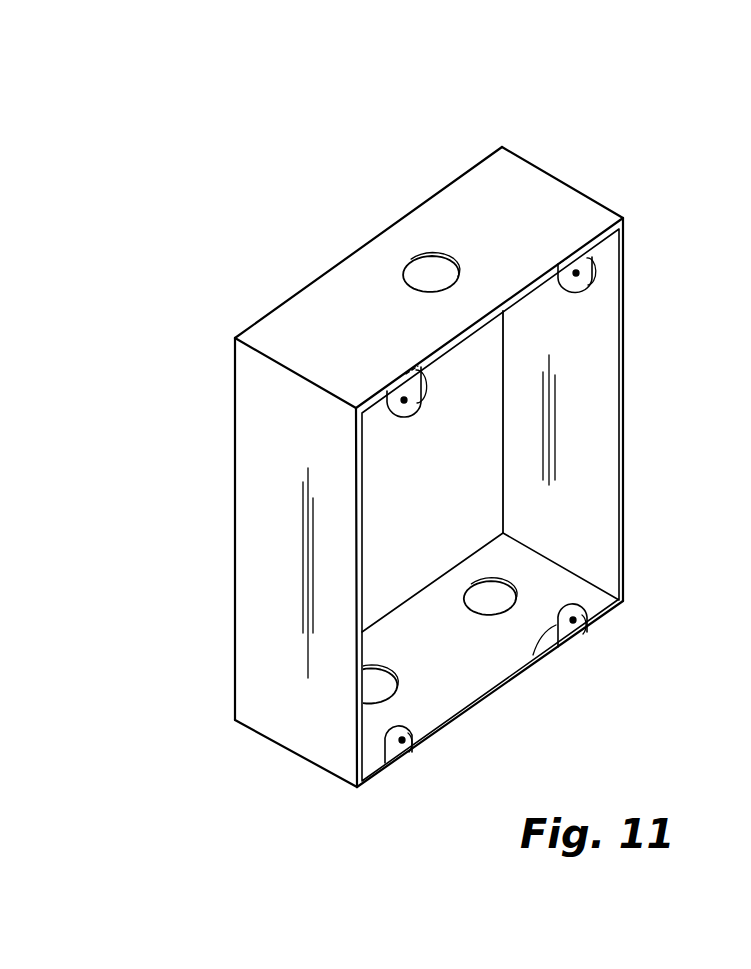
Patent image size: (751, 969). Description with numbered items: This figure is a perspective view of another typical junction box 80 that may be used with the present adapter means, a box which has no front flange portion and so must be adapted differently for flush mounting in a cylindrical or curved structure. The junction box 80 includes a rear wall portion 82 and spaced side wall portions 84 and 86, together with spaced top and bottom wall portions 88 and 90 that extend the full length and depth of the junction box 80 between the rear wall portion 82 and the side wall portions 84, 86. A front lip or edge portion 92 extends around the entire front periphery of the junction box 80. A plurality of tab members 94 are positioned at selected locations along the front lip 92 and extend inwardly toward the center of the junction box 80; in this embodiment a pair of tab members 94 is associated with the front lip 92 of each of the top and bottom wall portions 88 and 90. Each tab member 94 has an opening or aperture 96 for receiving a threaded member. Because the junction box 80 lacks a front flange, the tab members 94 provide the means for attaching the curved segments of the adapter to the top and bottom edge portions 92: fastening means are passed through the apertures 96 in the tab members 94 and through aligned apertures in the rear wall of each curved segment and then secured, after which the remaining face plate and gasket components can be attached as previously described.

The junction box 80 is at (425, 124).
The rear wall portion 82 is at (318, 275).
The side wall portion 84 is at (265, 545).
The side wall portion 86 is at (598, 323).
The top wall portion 88 is at (547, 198).
The bottom wall portion 90 is at (453, 676).
The front lip or edge portion 92 is at (472, 333).
The tab member 94 is at (590, 282).
The aperture 96 is at (590, 255).